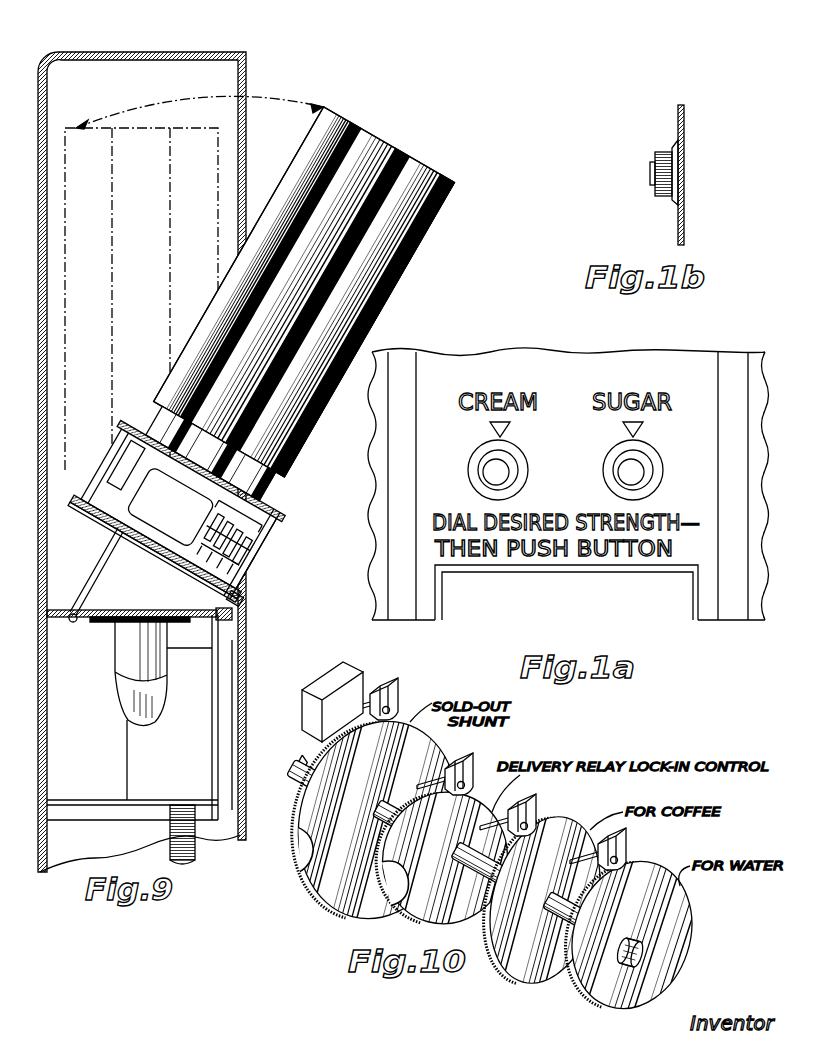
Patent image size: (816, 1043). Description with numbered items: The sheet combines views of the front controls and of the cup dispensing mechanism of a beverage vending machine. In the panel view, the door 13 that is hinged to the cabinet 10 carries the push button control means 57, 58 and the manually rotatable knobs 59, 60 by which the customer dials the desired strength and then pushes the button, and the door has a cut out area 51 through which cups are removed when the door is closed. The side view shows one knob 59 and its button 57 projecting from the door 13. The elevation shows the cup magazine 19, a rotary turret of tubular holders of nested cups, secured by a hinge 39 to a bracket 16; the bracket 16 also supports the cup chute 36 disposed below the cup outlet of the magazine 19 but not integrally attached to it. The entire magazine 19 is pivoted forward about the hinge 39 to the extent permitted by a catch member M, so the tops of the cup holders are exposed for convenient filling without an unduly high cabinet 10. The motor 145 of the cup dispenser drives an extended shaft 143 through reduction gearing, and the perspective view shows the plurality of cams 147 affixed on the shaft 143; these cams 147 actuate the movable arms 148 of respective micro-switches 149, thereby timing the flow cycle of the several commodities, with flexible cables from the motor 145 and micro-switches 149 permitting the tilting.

In FIG. 9, the cabinet 10 is at (212, 52).
In FIG. 1B, the door 13 is at (686, 232).
In FIG. 1A, the door 13 is at (630, 382).
In FIG. 9, the bracket 16 is at (234, 599).
In FIG. 9, the cup magazine 19 is at (295, 306).
In FIG. 9, the cup chute 36 is at (118, 655).
In FIG. 9, the hinge 39 is at (228, 618).
In FIG. 1A, the cut out area 51 is at (537, 572).
In FIG. 1B, the push button control means 57 is at (652, 176).
In FIG. 1A, the push button control means 57 is at (482, 480).
In FIG. 1A, the push button control means 58 is at (664, 478).
In FIG. 1B, the manually rotatable knob 59 is at (662, 200).
In FIG. 1A, the manually rotatable knob 59 is at (526, 464).
In FIG. 1A, the manually rotatable knob 60 is at (652, 463).
In FIG. 9, the extended shaft 143 is at (238, 516).
In FIG. 10, the extended shaft 143 is at (648, 953).
In FIG. 9, the motor 145 is at (160, 493).
In FIG. 9, the cams 147 is at (216, 560).
In FIG. 10, the cams 147 is at (532, 958).
In FIG. 10, the movable arms 148 is at (392, 686).
In FIG. 9, the micro-switches 149 is at (228, 539).
In FIG. 10, the micro-switches 149 is at (340, 680).
In FIG. 9, the catch member M is at (80, 568).